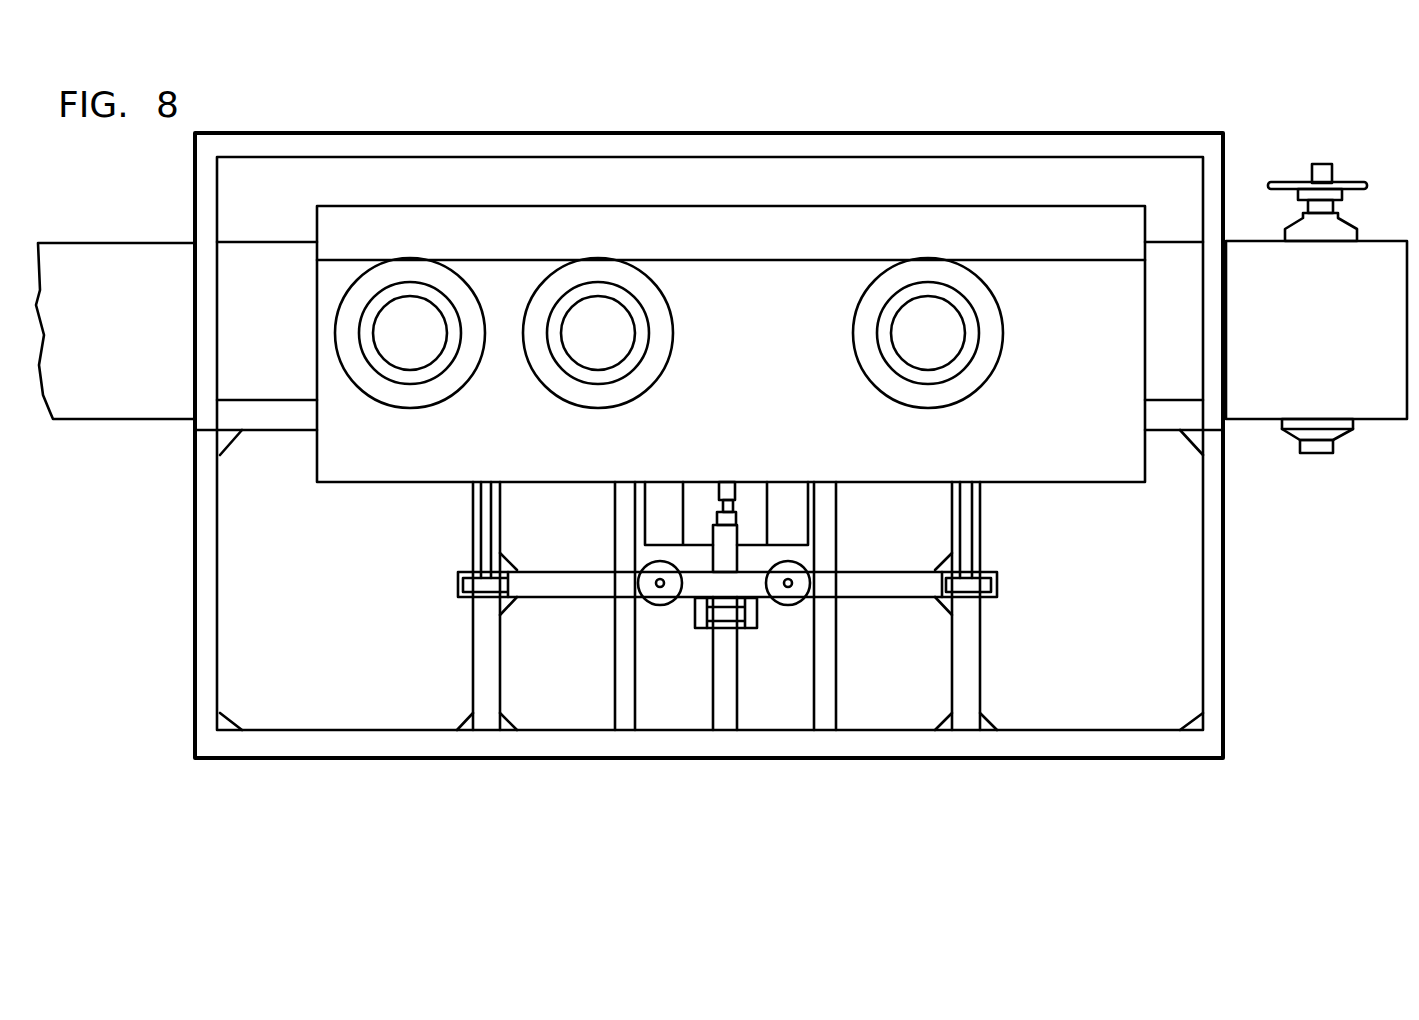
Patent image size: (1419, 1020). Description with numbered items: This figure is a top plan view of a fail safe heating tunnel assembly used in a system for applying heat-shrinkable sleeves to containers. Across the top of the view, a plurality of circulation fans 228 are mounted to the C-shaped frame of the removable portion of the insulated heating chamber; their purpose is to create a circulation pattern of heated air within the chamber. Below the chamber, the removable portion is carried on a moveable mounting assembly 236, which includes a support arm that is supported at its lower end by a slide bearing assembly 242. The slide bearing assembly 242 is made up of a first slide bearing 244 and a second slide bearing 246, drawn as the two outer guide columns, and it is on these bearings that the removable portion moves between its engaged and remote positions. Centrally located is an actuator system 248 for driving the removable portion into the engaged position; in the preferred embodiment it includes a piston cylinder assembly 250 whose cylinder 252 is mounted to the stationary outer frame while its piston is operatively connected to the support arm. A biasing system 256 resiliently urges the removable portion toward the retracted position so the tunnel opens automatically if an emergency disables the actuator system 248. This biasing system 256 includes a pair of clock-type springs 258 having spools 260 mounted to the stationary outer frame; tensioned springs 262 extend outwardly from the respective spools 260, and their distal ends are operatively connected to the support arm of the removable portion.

The circulation fans 228 is at (396, 275).
The moveable mounting assembly 236 is at (579, 696).
The slide bearing assembly 242 is at (445, 660).
The first slide bearing 244 is at (487, 542).
The second slide bearing 246 is at (966, 552).
The actuator system 248 is at (740, 710).
The piston cylinder assembly 250 is at (740, 687).
The cylinder 252 is at (723, 703).
The biasing system 256 is at (646, 615).
The clock-type springs 258 is at (643, 562).
The spools 260 is at (655, 601).
The springs 262 is at (682, 530).